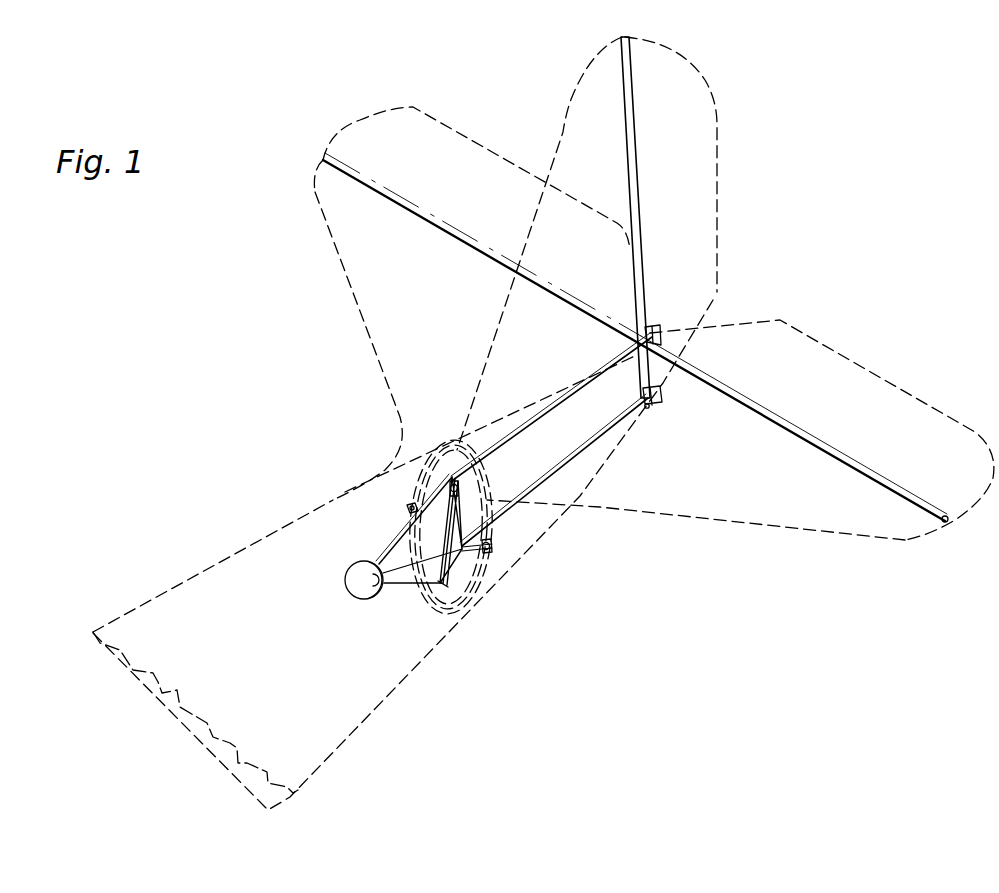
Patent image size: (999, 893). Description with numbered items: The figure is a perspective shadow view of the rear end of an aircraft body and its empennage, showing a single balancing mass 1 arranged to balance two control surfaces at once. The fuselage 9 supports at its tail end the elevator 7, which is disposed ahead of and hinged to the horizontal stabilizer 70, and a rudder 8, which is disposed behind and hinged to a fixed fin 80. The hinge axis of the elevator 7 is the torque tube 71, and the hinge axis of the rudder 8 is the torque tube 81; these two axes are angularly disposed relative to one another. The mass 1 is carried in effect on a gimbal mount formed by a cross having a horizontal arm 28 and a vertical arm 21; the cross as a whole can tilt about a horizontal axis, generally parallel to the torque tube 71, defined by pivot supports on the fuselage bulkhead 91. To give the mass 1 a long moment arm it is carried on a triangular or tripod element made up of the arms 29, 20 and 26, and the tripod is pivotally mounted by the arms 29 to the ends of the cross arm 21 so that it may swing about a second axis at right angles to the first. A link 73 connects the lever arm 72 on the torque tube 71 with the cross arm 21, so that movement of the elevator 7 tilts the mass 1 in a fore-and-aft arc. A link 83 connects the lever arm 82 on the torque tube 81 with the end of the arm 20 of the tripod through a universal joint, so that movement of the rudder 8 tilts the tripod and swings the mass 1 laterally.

The mass 1 is at (352, 586).
The elevator 7 is at (932, 413).
The horizontal stabilizer 70 is at (782, 513).
The torque tube 71 is at (817, 443).
The lever arm 72 is at (657, 332).
The link 73 is at (596, 378).
The rudder 8 is at (695, 118).
The fixed fin 80 is at (585, 93).
The torque tube 81 is at (631, 161).
The lever arm 82 is at (648, 390).
The link 83 is at (577, 457).
The fuselage 9 is at (357, 733).
The arm 20 is at (463, 552).
The vertical arm 21 is at (460, 488).
The arm 26 is at (398, 585).
The horizontal arm 28 is at (489, 542).
The arm 29 is at (390, 550).
The fuselage bulkhead 91 is at (497, 590).